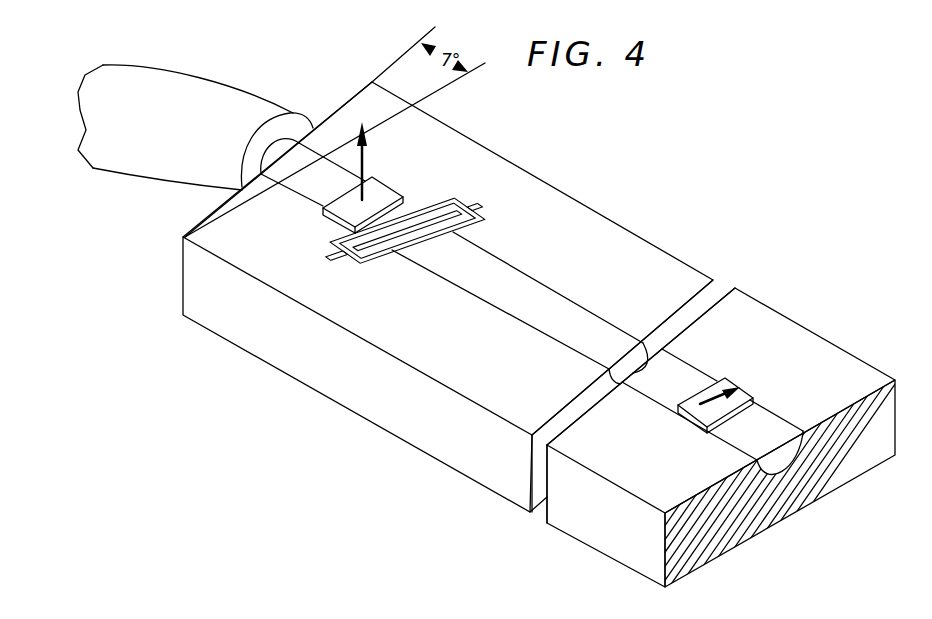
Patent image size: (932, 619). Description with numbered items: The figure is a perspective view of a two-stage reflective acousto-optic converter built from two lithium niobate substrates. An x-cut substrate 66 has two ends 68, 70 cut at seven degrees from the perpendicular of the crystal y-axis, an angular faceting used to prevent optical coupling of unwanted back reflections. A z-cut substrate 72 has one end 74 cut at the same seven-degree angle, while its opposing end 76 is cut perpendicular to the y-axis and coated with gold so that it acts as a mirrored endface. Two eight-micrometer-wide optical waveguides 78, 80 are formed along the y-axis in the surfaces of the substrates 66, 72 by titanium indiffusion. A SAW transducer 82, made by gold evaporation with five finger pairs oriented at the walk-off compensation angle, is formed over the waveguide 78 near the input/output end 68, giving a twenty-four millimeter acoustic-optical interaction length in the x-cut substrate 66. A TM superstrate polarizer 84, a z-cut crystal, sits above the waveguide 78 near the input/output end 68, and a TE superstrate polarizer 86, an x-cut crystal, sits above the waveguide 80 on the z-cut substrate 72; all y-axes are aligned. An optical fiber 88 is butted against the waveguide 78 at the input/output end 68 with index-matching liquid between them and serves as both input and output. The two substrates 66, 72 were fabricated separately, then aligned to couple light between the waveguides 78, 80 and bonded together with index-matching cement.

The x-cut substrate 66 is at (400, 404).
The input/output end 68 is at (333, 109).
The end of x-cut substrate 70 is at (705, 296).
The z-cut substrate 72 is at (612, 525).
The end of z-cut substrate 74 is at (720, 290).
The mirrored end 76 is at (817, 492).
The optical waveguide 78 is at (573, 325).
The optical waveguide 80 is at (677, 365).
The SAW transducer 82 is at (484, 213).
The TM superstrate polarizer 84 is at (389, 193).
The TE superstrate polarizer 86 is at (737, 388).
The optical fiber 88 is at (198, 88).